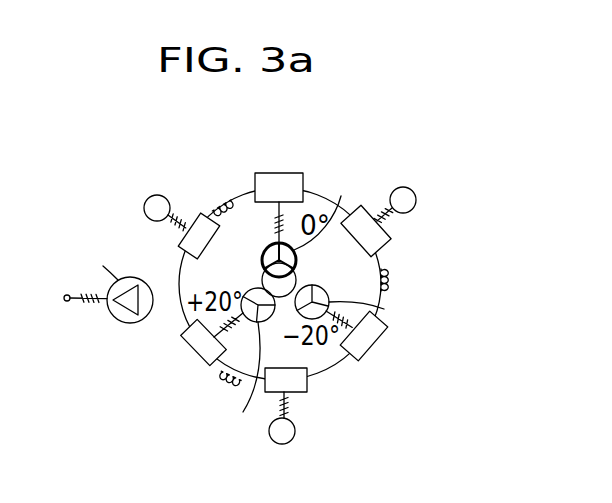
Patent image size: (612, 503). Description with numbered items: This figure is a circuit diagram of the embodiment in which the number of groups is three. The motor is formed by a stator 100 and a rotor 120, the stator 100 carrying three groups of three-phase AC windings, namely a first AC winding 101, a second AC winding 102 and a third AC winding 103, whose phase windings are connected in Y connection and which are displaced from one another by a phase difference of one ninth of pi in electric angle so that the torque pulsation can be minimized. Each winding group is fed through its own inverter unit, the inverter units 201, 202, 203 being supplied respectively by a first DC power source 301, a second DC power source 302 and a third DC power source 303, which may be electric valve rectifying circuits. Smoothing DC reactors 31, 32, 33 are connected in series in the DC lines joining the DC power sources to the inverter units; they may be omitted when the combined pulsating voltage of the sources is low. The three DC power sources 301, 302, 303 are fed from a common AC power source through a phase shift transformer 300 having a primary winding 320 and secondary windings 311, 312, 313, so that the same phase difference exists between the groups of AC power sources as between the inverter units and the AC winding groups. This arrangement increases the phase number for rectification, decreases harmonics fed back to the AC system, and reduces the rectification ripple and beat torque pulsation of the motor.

The smoothing DC reactor 31 is at (221, 194).
The smoothing DC reactor 32 is at (388, 280).
The smoothing DC reactor 33 is at (230, 382).
The stator 100 is at (250, 268).
The first AC winding 101 is at (330, 209).
The second AC winding 102 is at (386, 308).
The third AC winding 103 is at (230, 382).
The rotor 120 is at (350, 272).
The inverter unit 201 is at (278, 173).
The inverter unit 202 is at (382, 333).
The inverter unit 203 is at (188, 343).
The phase shift transformer 300 is at (132, 267).
The first DC power source 301 is at (178, 244).
The second DC power source 302 is at (386, 246).
The third DC power source 303 is at (307, 387).
The secondary winding 311 is at (156, 195).
The secondary winding 312 is at (401, 187).
The secondary winding 313 is at (283, 444).
The primary winding 320 is at (116, 320).